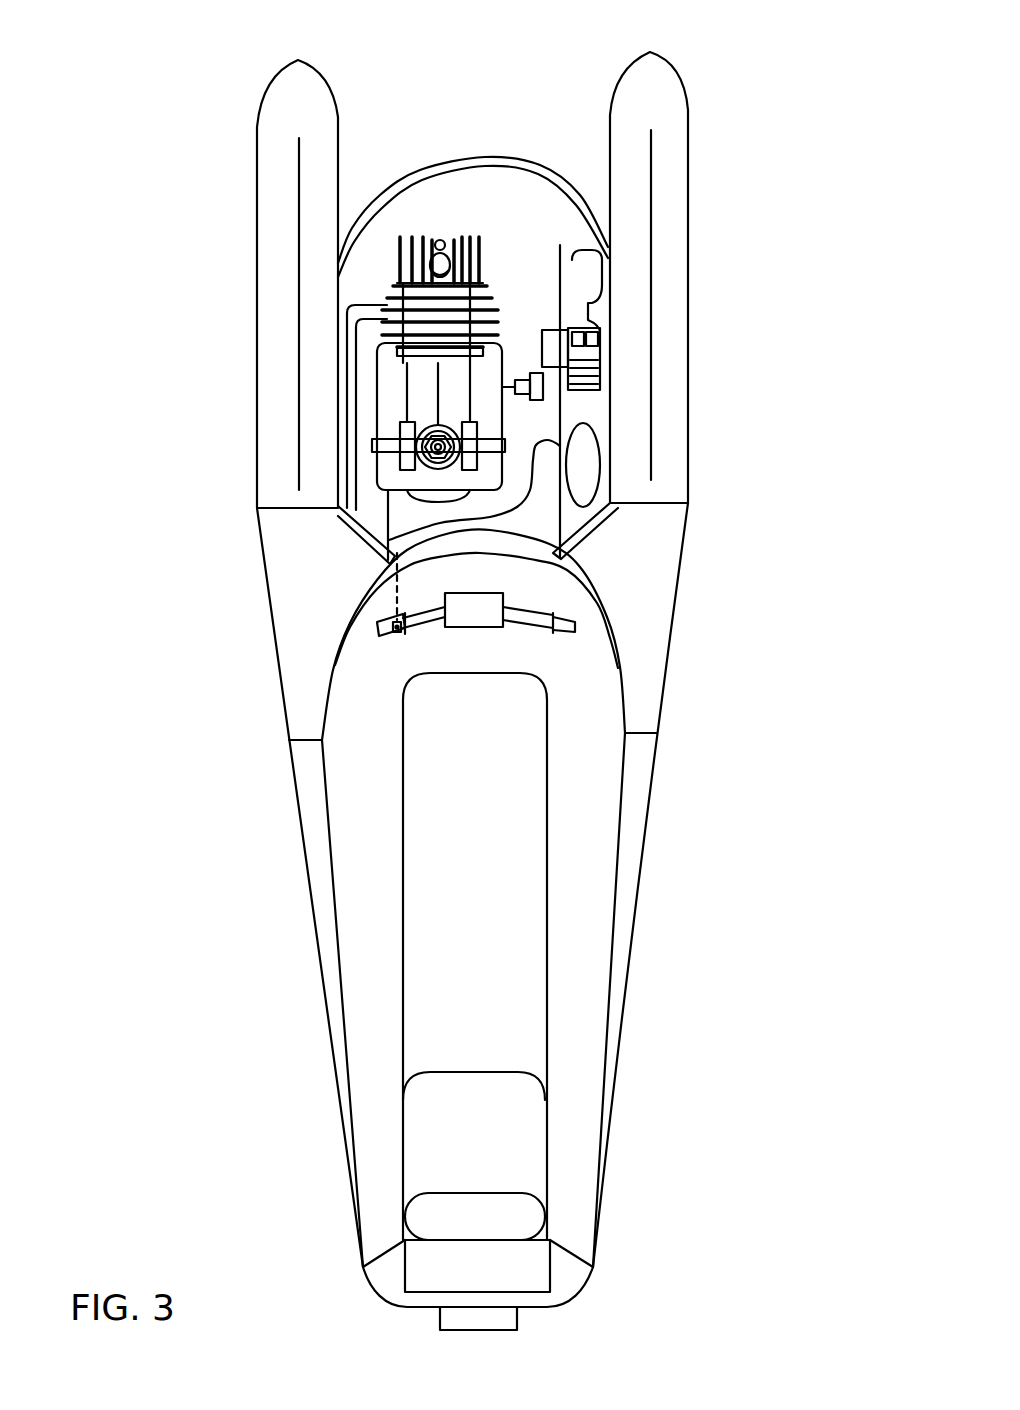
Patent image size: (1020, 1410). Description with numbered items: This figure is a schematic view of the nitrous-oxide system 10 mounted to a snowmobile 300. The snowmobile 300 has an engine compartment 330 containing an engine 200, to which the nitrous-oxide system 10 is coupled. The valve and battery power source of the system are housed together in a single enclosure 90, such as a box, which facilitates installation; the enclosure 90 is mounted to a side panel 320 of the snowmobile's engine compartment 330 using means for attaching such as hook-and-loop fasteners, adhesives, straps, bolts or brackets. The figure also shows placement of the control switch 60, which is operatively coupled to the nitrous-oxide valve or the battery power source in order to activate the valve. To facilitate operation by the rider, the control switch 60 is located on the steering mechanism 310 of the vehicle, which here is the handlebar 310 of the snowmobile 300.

The nitrous-oxide system 10 is at (551, 313).
The control switch 60 is at (397, 636).
The enclosure 90 is at (543, 368).
The engine 200 is at (446, 236).
The snowmobile 300 is at (640, 857).
The steering mechanism 310 is at (378, 628).
The side panel 320 is at (570, 233).
The engine compartment 330 is at (487, 190).